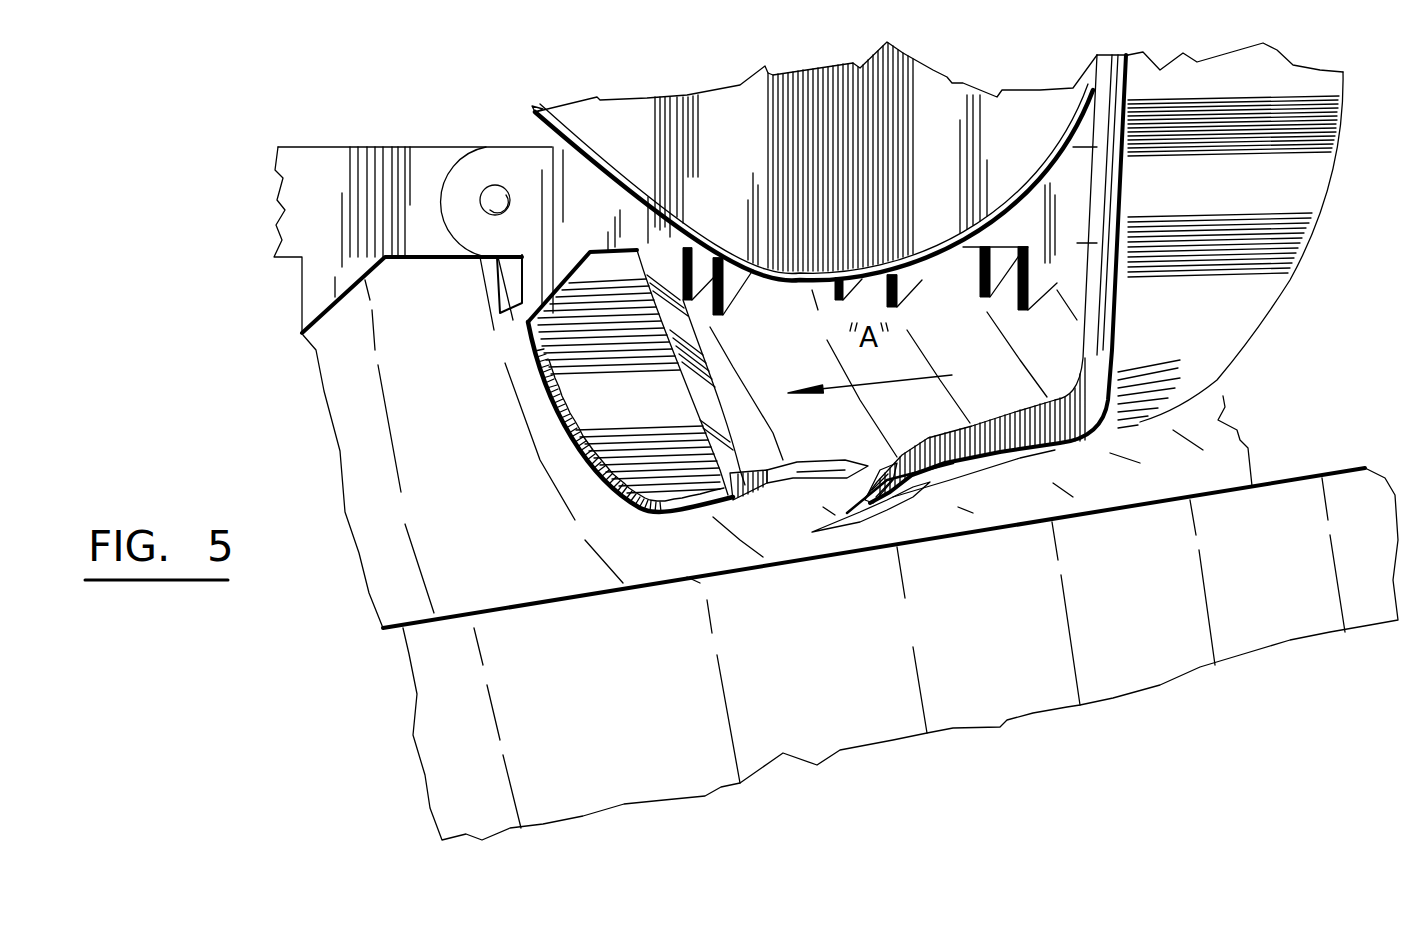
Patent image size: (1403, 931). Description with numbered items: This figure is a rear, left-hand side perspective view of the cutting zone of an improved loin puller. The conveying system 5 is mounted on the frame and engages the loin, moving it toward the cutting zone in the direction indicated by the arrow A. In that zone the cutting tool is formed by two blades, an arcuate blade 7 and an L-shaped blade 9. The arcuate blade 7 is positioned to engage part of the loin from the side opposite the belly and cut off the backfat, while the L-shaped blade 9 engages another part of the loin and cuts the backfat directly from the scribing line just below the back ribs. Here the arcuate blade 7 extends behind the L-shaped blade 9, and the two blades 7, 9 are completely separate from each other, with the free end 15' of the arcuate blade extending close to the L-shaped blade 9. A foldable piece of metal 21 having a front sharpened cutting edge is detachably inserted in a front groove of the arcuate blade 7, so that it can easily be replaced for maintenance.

The conveying system 5 is at (443, 340).
The arcuate blade 7 is at (600, 467).
The L-shaped blade 9 is at (1172, 368).
The foldable piece of metal 21 is at (822, 461).
The lower lip 15' is at (865, 543).